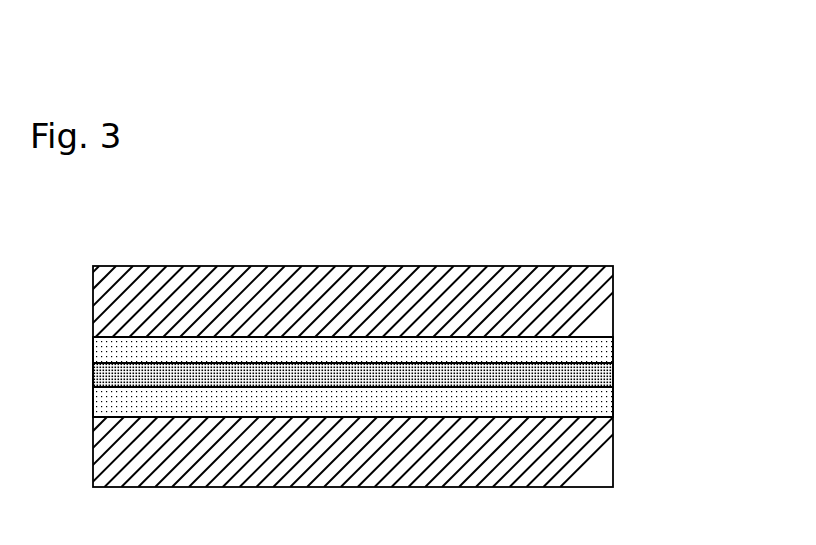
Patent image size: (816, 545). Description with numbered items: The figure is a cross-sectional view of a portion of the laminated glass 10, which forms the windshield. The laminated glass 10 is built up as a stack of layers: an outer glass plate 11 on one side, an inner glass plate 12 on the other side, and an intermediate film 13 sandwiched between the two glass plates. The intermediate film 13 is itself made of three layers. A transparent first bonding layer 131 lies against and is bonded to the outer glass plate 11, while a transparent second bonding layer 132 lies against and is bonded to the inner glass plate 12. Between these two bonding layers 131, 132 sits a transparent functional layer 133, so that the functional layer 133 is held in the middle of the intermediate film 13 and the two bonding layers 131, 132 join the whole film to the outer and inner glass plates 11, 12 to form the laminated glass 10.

The laminate 10 is at (617, 230).
The outer glass plate 11 is at (602, 303).
The inner glass plate 12 is at (593, 438).
The intermediate film 13 is at (703, 348).
The first bonding layer 131 is at (602, 349).
The second bonding layer 132 is at (603, 397).
The functional layer 133 is at (602, 375).